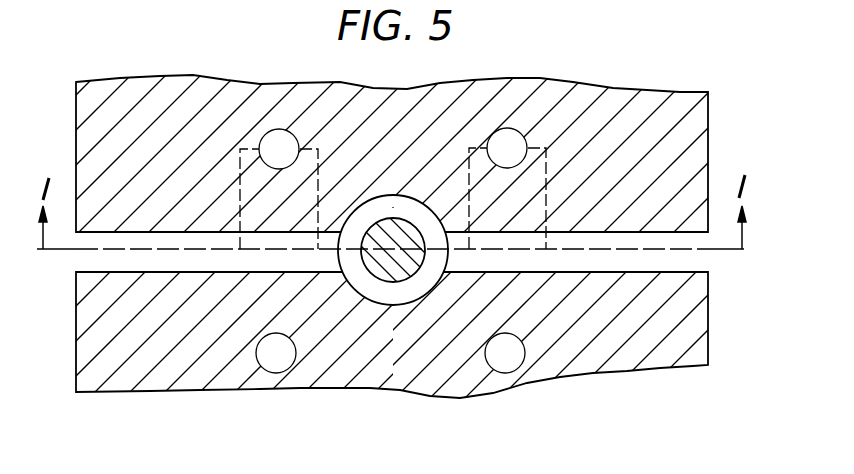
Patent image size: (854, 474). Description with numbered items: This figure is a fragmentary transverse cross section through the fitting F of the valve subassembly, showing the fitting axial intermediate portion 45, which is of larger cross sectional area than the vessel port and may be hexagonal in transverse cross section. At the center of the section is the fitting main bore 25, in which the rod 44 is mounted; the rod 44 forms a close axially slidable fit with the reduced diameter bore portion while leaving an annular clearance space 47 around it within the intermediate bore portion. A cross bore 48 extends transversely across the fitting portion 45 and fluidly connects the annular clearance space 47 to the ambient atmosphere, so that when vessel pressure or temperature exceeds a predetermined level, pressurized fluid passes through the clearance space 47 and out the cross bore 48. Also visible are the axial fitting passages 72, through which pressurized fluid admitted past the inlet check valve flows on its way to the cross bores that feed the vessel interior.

The fitting F is at (198, 100).
The cross bore 48 is at (106, 232).
The fitting axial intermediate portion 45 is at (620, 337).
The axial fitting passages 72 is at (262, 368).
The fitting main bore 25 is at (367, 300).
The annular clearance space 47 is at (416, 287).
The rod 44 is at (391, 282).